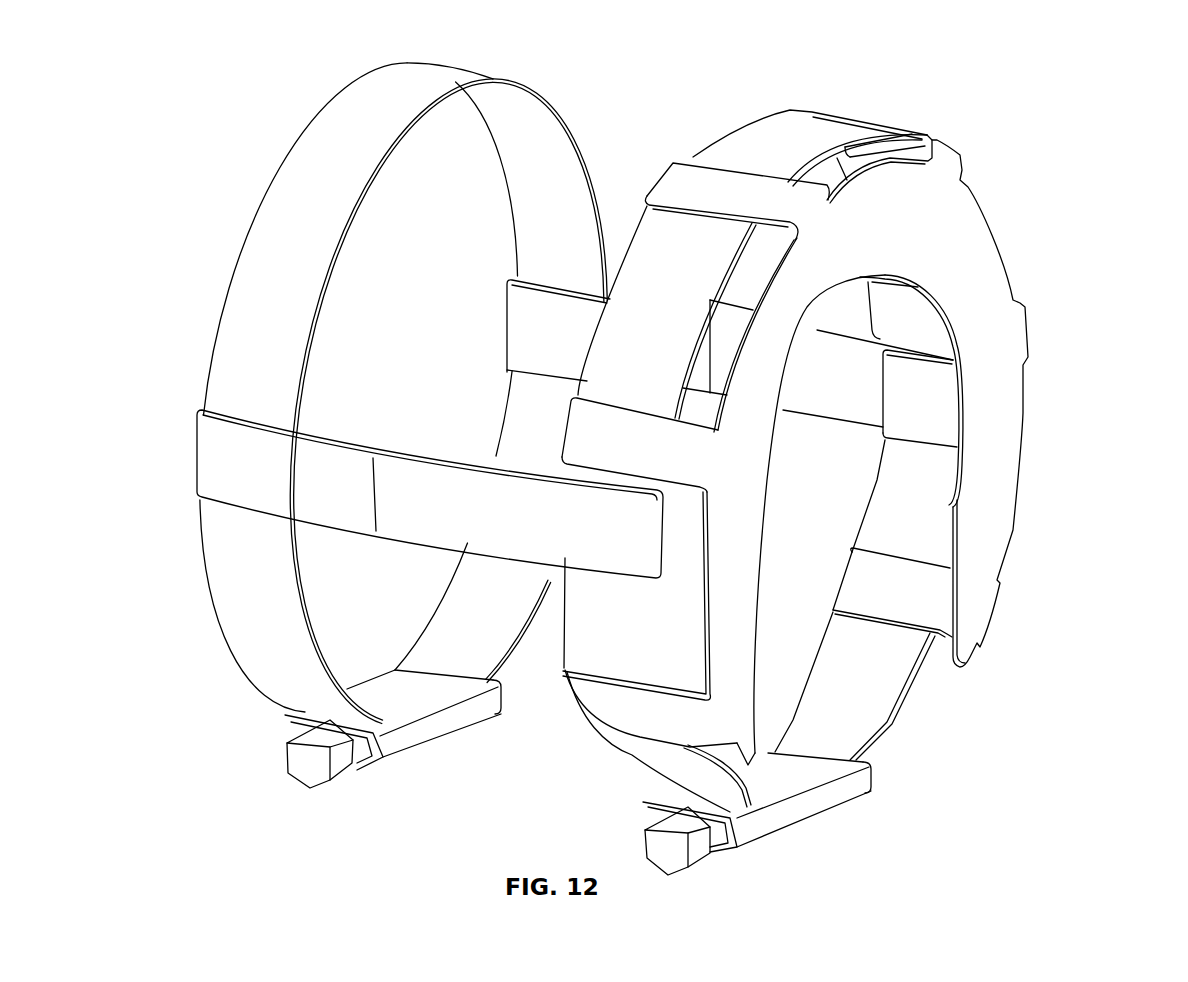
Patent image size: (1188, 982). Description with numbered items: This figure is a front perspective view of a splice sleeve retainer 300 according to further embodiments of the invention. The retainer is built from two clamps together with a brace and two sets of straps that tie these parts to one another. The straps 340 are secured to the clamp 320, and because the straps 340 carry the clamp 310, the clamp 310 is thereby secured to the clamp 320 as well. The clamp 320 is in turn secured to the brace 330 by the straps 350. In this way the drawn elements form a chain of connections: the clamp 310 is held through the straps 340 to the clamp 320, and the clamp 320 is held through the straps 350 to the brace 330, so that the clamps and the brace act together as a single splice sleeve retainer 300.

The splice sleeve retainer 300 is at (1073, 100).
The clamp 310 is at (246, 632).
The clamp 320 is at (632, 755).
The brace 330 is at (973, 284).
The straps 340 is at (432, 478).
The straps 350 is at (688, 182).